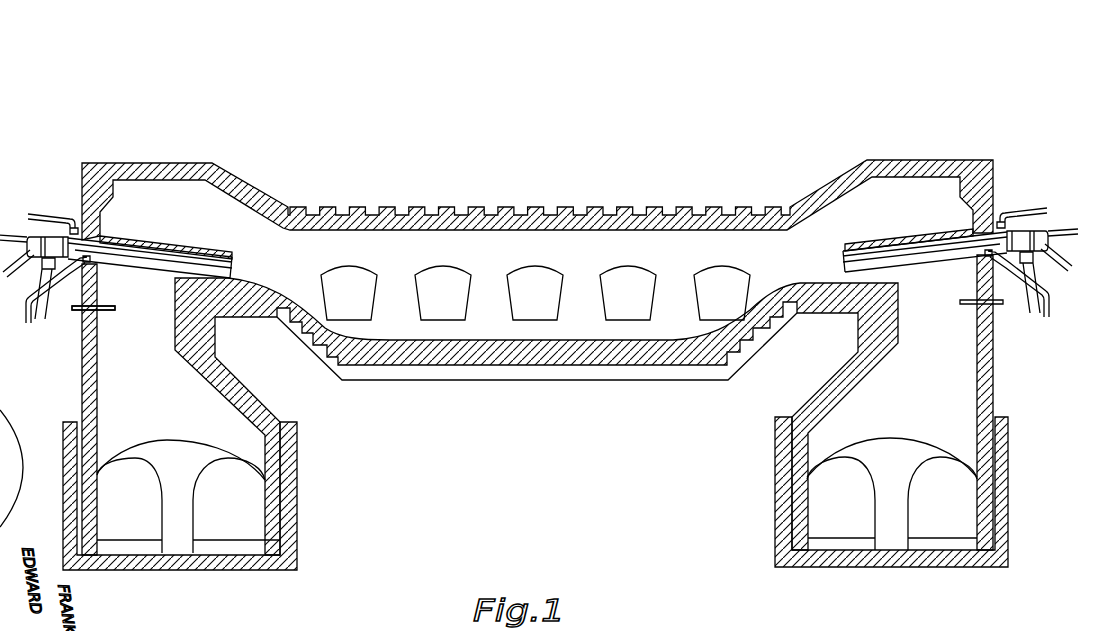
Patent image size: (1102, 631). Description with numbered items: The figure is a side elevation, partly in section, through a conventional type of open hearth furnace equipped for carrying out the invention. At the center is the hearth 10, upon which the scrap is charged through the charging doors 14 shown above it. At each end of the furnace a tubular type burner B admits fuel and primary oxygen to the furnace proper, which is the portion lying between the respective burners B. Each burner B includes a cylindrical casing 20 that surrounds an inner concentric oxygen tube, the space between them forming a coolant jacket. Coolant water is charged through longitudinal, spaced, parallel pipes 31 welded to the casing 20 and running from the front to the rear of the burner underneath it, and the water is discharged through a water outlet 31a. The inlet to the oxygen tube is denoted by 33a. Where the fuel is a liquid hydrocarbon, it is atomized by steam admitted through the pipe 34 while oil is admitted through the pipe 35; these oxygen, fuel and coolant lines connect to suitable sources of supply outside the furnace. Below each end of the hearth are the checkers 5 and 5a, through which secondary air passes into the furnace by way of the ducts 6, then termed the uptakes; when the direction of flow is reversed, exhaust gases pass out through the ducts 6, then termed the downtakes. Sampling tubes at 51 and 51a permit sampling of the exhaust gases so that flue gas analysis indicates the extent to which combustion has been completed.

The checker 5 is at (140, 527).
The checker 5a is at (233, 527).
The duct 6 is at (112, 345).
The hearth 10 is at (437, 355).
The charging door 14 is at (435, 278).
The cylindrical casing 20 is at (128, 260).
The tubular type burner B is at (203, 267).
The coolant pipe 31 is at (1050, 302).
The water outlet 31a is at (1020, 210).
The oxygen tube inlet 33a is at (1034, 270).
The steam pipe 34 is at (1054, 251).
The oil pipe 35 is at (1063, 230).
The sampling tube 51 is at (76, 312).
The sampling tube 51a is at (993, 305).